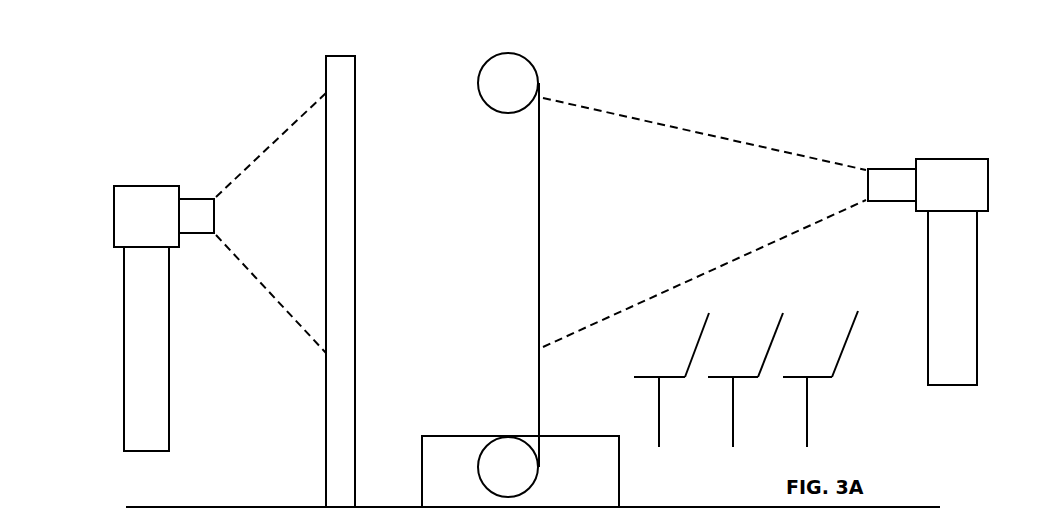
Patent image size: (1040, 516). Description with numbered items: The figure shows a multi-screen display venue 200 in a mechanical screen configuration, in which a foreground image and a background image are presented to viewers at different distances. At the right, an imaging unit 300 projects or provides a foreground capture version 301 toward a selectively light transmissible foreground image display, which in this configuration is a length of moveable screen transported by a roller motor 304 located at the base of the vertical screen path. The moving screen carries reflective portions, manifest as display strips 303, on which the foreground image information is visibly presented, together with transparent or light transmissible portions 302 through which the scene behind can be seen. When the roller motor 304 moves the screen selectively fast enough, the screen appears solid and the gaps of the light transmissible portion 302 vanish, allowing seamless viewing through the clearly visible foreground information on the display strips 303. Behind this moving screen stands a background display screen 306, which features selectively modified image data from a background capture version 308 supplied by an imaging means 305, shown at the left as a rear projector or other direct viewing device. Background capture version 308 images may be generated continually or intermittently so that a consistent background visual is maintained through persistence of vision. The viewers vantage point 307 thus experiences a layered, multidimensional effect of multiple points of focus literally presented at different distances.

The multi-screen display venue 200 is at (829, 66).
The imaging unit 300 is at (948, 162).
The foreground capture version 301 is at (657, 115).
The transparent/light transmissible portion 302 is at (528, 359).
The reflective portion / display strip 303 is at (528, 286).
The roller motor 304 is at (570, 446).
The imaging means 305 is at (137, 237).
The background display screen 306 is at (364, 193).
The viewers vantage point 307 is at (843, 382).
The background capture version 308 is at (263, 137).